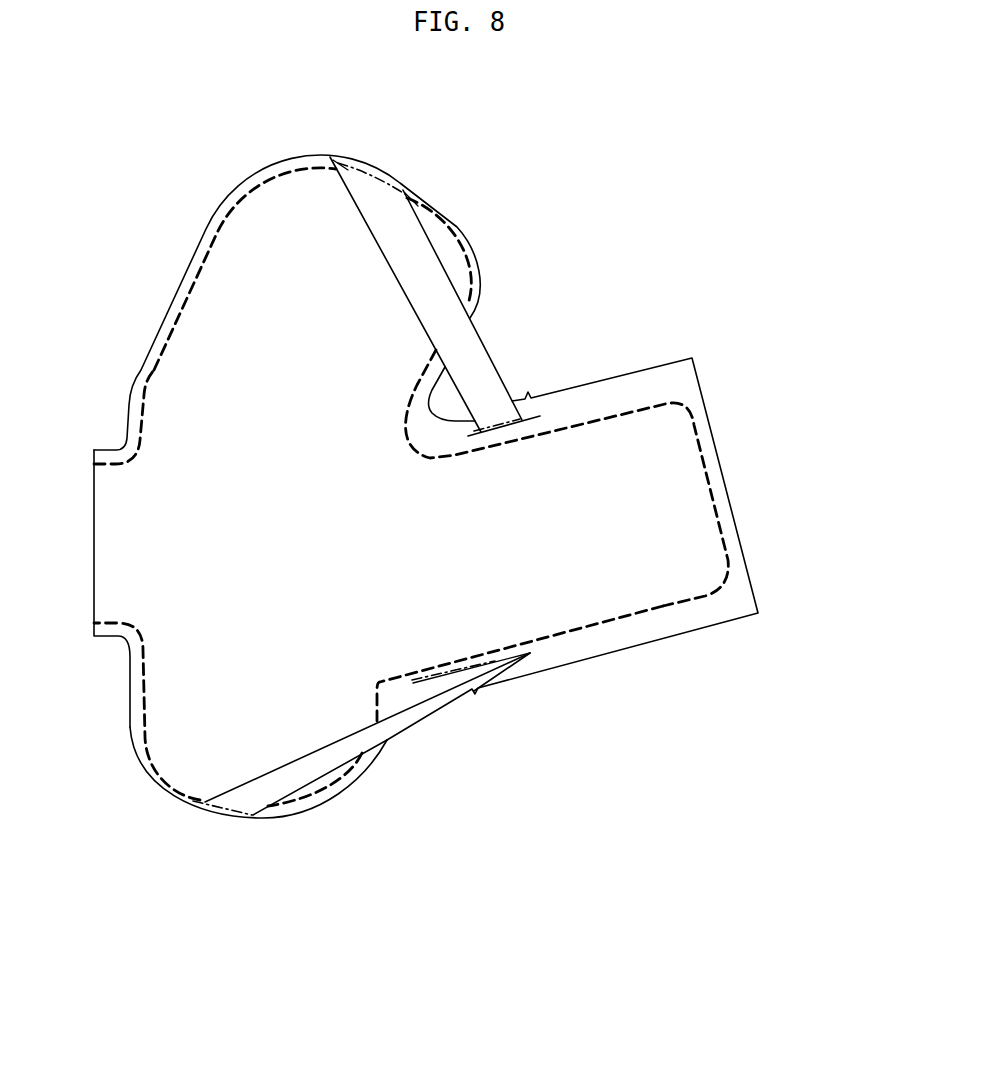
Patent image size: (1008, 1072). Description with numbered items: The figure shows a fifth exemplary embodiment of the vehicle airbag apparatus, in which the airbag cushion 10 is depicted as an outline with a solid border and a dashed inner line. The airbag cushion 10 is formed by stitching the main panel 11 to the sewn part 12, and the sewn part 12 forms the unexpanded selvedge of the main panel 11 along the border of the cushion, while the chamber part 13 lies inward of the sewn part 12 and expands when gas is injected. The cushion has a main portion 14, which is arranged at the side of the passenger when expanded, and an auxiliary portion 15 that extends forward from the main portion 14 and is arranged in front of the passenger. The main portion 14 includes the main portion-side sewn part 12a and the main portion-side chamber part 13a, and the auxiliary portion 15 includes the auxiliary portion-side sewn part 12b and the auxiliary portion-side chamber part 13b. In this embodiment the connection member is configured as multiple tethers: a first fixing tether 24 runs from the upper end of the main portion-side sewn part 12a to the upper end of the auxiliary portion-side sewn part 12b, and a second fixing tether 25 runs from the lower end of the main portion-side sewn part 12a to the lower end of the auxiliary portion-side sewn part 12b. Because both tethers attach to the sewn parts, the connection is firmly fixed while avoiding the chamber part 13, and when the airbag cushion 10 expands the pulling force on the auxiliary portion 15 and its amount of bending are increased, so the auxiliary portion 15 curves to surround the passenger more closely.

The airbag cushion 10 is at (213, 208).
The main panel 11 is at (438, 197).
The sewn part 12 is at (415, 758).
The main portion-side sewn part 12a is at (168, 783).
The auxiliary portion-side sewn part 12b is at (660, 607).
The chamber part 13 is at (518, 403).
The main portion-side chamber part 13a is at (275, 230).
The auxiliary portion-side chamber part 13b is at (643, 468).
The main portion 14 is at (228, 360).
The auxiliary portion 15 is at (635, 516).
The first fixing tether 24 is at (427, 277).
The second fixing tether 25 is at (423, 690).